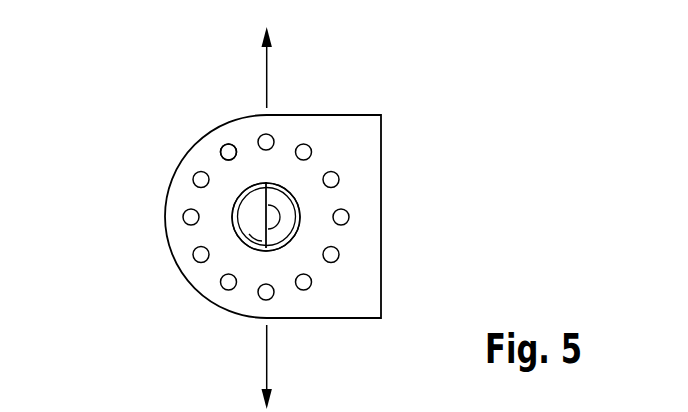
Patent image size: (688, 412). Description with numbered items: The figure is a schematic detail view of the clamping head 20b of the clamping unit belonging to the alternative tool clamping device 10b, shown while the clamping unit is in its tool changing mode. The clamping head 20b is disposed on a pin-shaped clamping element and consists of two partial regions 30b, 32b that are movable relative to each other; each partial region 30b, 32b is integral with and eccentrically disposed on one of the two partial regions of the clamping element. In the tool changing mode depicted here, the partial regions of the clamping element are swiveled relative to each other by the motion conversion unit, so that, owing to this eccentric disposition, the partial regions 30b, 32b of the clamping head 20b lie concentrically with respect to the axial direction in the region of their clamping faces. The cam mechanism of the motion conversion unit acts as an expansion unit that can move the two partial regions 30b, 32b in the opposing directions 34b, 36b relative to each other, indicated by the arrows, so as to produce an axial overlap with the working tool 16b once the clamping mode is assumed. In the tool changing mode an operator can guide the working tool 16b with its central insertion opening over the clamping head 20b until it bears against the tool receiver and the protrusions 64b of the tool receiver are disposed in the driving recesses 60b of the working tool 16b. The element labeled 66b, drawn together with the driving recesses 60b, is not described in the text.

The tool clamping device 10b is at (411, 87).
The working tool 16b is at (365, 152).
The clamping head 20b is at (242, 261).
The partial region 30b is at (247, 214).
The partial region 32b is at (298, 217).
The direction 34b is at (268, 362).
The direction 36b is at (268, 80).
The driving recesses 60b is at (194, 180).
The protrusions 64b is at (224, 148).
The opening 66b is at (222, 115).